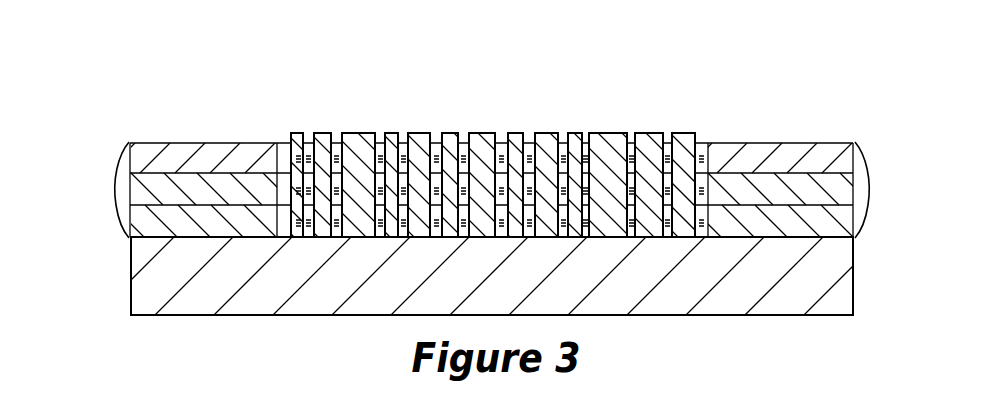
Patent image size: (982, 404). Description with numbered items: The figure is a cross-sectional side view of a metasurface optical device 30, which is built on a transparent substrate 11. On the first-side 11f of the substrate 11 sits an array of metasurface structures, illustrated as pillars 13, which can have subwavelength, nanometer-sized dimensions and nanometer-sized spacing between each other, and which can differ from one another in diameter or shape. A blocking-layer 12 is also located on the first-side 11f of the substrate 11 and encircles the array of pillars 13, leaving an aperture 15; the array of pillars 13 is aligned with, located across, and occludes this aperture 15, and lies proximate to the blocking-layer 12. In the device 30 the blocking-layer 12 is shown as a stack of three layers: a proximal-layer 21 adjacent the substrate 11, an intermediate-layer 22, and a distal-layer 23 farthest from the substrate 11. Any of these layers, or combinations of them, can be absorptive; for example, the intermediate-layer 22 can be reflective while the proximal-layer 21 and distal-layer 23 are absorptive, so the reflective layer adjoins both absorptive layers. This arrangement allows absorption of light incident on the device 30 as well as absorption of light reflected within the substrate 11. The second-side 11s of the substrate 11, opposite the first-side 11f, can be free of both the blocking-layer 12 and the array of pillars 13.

The metasurface optical device 30 is at (148, 108).
The transparent substrate 11 is at (508, 291).
The first-side 11f is at (746, 240).
The second-side 11s is at (793, 313).
The blocking-layer 12 is at (117, 205).
The pillars 13 is at (621, 201).
The aperture 15 is at (275, 131).
The proximal-layer 21 is at (224, 233).
The intermediate-layer 22 is at (224, 201).
The distal-layer 23 is at (224, 170).